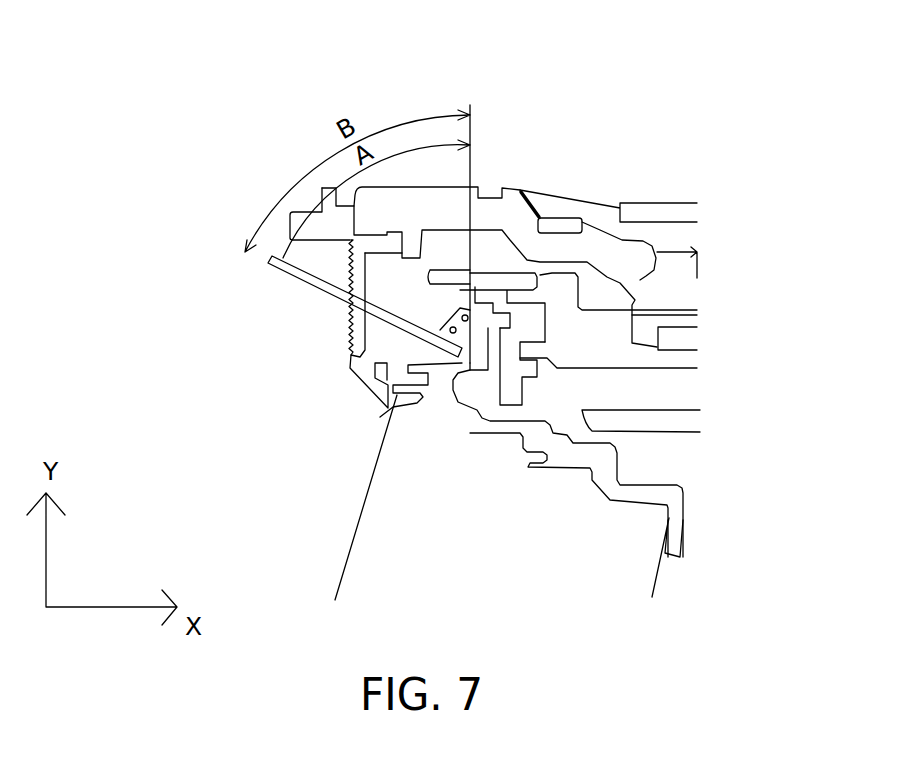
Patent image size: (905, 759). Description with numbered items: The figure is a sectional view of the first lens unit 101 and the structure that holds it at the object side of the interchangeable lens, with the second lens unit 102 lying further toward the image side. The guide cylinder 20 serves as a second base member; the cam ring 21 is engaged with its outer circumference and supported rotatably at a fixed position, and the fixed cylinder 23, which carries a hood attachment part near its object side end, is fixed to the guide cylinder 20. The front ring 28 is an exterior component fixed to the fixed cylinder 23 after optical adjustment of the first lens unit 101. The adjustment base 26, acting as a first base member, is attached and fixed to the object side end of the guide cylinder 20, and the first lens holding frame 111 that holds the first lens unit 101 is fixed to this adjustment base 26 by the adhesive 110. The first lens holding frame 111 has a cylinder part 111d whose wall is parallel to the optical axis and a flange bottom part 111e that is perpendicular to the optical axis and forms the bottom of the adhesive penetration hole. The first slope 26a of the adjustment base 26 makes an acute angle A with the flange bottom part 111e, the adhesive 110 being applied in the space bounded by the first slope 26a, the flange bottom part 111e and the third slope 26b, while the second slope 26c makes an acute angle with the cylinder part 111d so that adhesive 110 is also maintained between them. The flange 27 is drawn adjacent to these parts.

The guide cylinder 20 is at (598, 347).
The cam ring 21 is at (697, 328).
The fixed cylinder 23 is at (419, 206).
The adjustment base 26 is at (472, 323).
The first slope 26a is at (422, 320).
The third slope 26b is at (443, 292).
The second slope 26c is at (283, 260).
The flange 27 is at (532, 328).
The front ring 28 is at (358, 357).
The first lens unit 101 is at (392, 558).
The second lens unit 102 is at (663, 422).
The adhesive 110 is at (703, 613).
The first lens holding frame 111 is at (627, 492).
The cylinder part 111d is at (417, 400).
The flange bottom part 111e is at (711, 581).